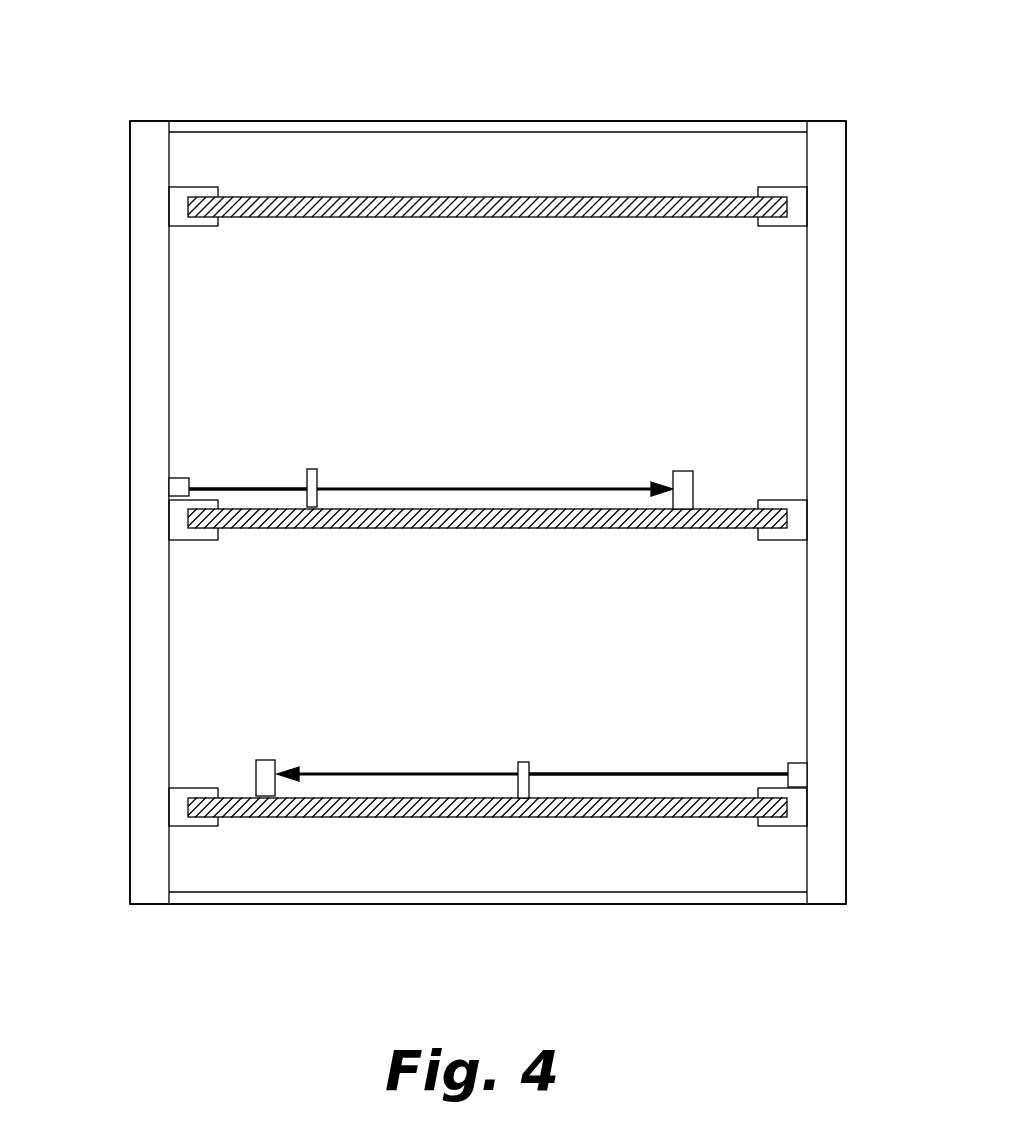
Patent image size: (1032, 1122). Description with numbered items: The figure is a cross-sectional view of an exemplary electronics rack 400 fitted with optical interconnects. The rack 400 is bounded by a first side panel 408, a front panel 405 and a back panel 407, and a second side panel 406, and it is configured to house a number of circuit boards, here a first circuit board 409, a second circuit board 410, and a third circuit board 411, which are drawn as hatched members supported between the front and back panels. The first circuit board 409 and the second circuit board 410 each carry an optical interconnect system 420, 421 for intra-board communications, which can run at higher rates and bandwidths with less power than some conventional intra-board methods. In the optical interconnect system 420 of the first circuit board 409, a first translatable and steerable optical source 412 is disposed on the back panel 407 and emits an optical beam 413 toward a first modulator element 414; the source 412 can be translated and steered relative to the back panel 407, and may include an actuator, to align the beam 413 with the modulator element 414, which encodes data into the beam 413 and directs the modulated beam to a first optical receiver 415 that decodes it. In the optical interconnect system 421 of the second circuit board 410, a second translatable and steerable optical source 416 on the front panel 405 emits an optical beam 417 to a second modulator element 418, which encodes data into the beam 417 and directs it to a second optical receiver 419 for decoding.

The electronics rack 400 is at (112, 102).
The front panel 405 is at (150, 480).
The second side panel 406 is at (457, 900).
The back panel 407 is at (830, 515).
The first side panel 408 is at (453, 128).
The first circuit board 409 is at (375, 829).
The second circuit board 410 is at (438, 528).
The third circuit board 411 is at (457, 214).
The first translatable and steerable optical source 412 is at (795, 770).
The optical beam 413 is at (585, 773).
The first modulator element 414 is at (523, 762).
The first optical receiver 415 is at (268, 762).
The second translatable and steerable optical source 416 is at (183, 487).
The optical beam 417 is at (270, 486).
The second modulator element 418 is at (311, 480).
The second optical receiver 419 is at (678, 483).
The optical interconnect system 420 is at (406, 704).
The optical interconnect system 421 is at (401, 440).